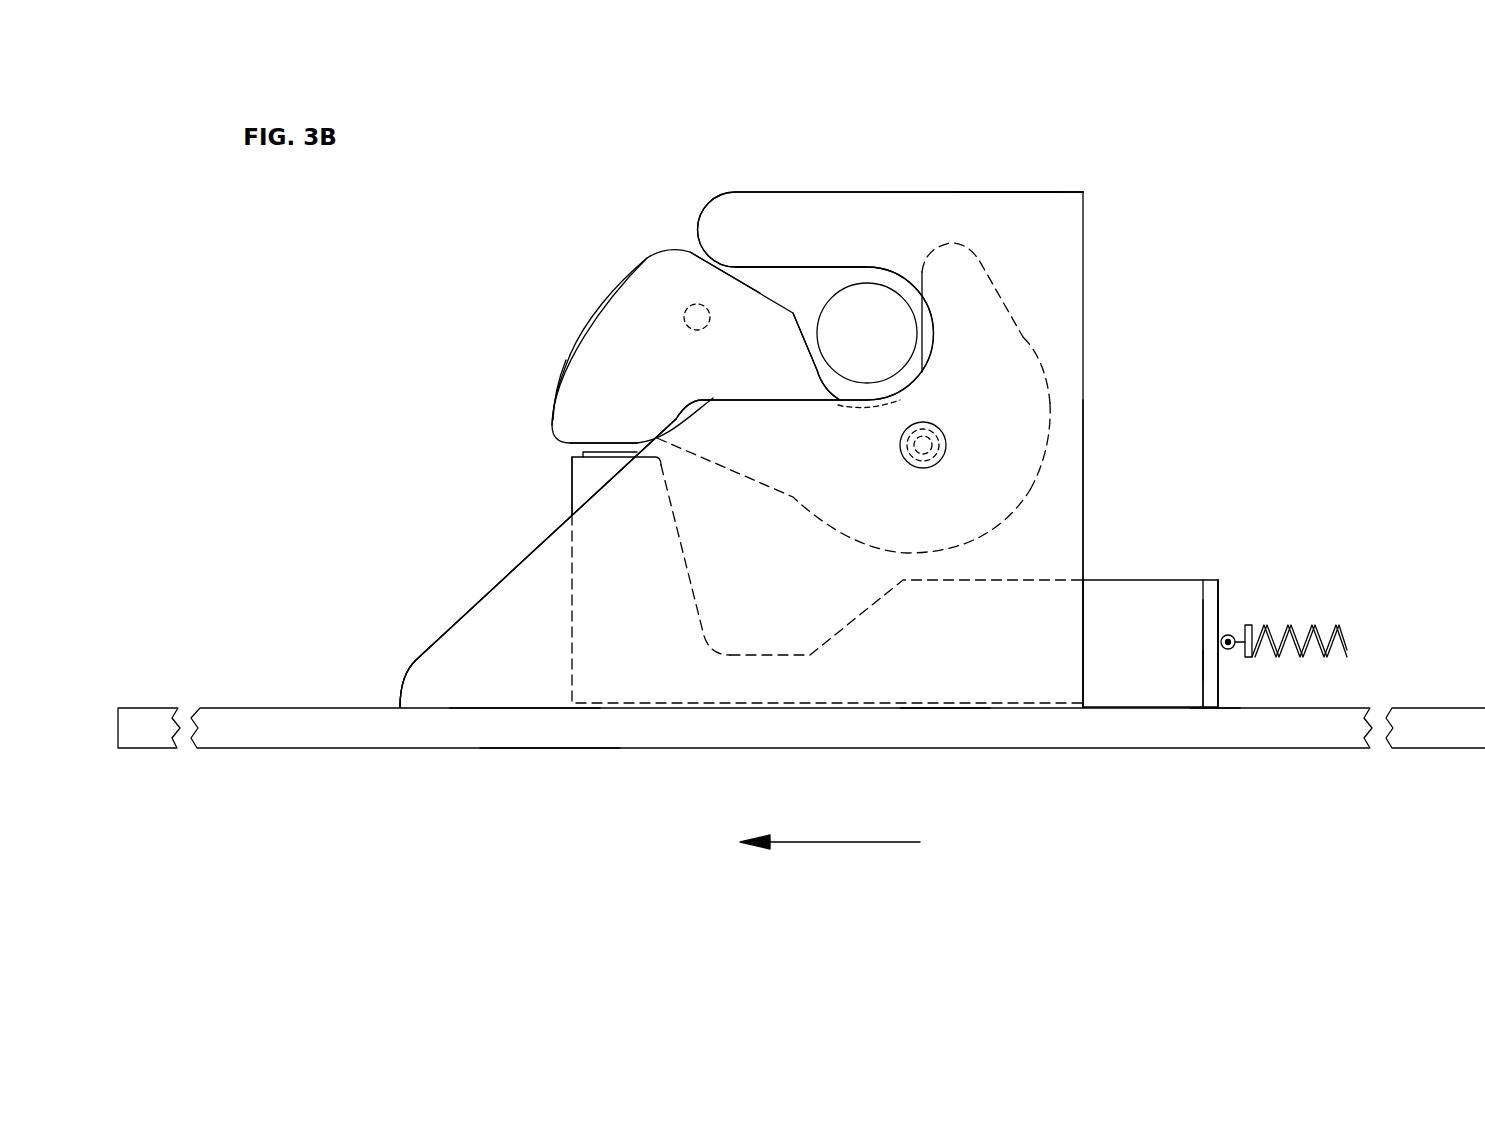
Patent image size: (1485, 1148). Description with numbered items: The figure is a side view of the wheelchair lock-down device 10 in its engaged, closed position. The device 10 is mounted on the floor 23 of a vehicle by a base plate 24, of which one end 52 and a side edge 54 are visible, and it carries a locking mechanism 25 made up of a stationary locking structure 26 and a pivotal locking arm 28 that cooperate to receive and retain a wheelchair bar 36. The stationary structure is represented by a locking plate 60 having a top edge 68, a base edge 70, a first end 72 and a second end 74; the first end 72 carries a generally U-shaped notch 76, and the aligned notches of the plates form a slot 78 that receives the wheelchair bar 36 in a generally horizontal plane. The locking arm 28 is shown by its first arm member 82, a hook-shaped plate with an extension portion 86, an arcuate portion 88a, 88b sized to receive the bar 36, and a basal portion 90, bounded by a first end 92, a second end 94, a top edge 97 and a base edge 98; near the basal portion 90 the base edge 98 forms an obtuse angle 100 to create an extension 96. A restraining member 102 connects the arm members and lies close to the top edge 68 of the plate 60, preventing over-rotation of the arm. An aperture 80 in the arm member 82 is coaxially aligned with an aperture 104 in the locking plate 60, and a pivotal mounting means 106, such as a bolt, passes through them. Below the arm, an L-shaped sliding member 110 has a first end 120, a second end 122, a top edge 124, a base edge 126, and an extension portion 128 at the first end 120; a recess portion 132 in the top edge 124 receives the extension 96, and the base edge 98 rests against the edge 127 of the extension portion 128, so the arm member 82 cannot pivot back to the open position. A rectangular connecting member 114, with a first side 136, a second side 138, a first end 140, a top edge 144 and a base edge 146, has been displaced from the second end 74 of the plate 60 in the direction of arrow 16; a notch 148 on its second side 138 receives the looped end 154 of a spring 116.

The wheelchair lock-down device 10 is at (810, 449).
The arrow 16 is at (830, 860).
The floor 23 is at (250, 788).
The base plate 24 is at (738, 788).
The locking mechanism 25 is at (1033, 131).
The stationary locking structure 26 is at (985, 161).
The pivotal locking arm 28 is at (696, 322).
The wheelchair bar 36 is at (867, 305).
The end of base plate 52 is at (1435, 702).
The side edge of base plate 54 is at (550, 763).
The locking plate 60 is at (756, 419).
The top edge of locking plate 68 is at (981, 167).
The base edge of locking plate 70 is at (525, 683).
The first end of locking plate 72 is at (510, 563).
The second end of locking plate 74 is at (1125, 553).
The notch 76 is at (779, 290).
The slot 78 is at (801, 244).
The aperture of arm member 80 is at (969, 439).
The first arm member 82 is at (476, 436).
The extension portion 86 is at (986, 284).
The arcuate portion 88a is at (789, 356).
The arcuate portion 88b is at (1006, 362).
The basal portion 90 is at (575, 306).
The first end of arm member 92 is at (1080, 445).
The second end of arm member 94 is at (522, 390).
The extension 96 is at (604, 412).
The top edge of arm member 97 is at (727, 254).
The base edge of arm member 98 is at (843, 503).
The obtuse angle 100 is at (695, 553).
The restraining member 102 is at (660, 319).
The aperture of locking plate 104 is at (962, 430).
The pivotal mounting means 106 is at (939, 421).
The sliding member 110 is at (1070, 743).
The connecting member 114 is at (1245, 586).
The first spring 116 is at (1317, 621).
The first end of sliding member 120 is at (780, 580).
The second end of sliding member 122 is at (1165, 640).
The top edge of sliding member 124 is at (1150, 598).
The base edge of sliding member 126 is at (945, 744).
The edge of extension portion 127 is at (565, 460).
The extension portion of sliding member 128 is at (529, 486).
The recess portion 132 is at (906, 617).
The first side of connecting member 136 is at (1168, 678).
The second side of connecting member 138 is at (1255, 633).
The first end of connecting member 140 is at (1245, 713).
The top edge of connecting member 144 is at (1222, 607).
The base edge of connecting member 146 is at (1227, 744).
The spring notch 148 is at (1254, 666).
The spring end 154 is at (1269, 620).